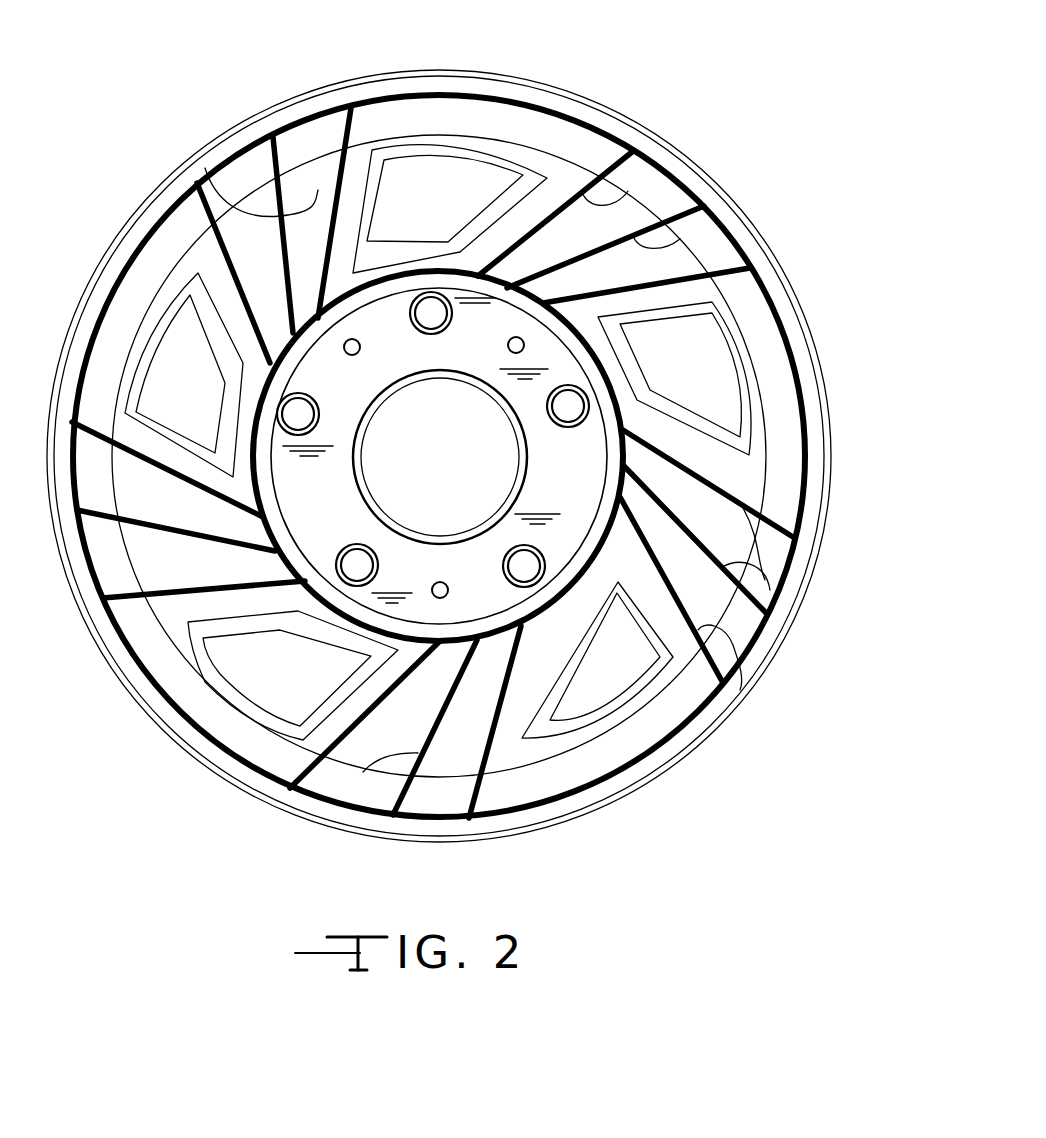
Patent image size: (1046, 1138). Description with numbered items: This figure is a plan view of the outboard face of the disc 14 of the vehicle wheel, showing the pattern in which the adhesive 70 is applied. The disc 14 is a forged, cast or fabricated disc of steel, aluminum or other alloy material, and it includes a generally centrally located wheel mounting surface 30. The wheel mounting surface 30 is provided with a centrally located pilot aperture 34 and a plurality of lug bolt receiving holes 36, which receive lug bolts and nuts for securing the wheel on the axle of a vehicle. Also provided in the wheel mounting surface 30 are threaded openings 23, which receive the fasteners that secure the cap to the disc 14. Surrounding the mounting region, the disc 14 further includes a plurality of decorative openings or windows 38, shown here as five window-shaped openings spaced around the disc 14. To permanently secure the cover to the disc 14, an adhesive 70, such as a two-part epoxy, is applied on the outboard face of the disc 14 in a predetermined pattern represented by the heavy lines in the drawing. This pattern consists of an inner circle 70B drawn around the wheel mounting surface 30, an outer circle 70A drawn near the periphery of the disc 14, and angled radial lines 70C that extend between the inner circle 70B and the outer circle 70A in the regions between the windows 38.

The disc 14 is at (738, 728).
The threaded openings 23 is at (356, 338).
The wheel mounting surface 30 is at (330, 507).
The pilot aperture 34 is at (373, 452).
The lug bolt receiving holes 36 is at (413, 320).
The decorative openings or windows 38 is at (440, 160).
The adhesive 70 is at (840, 405).
The outer circle 70A is at (650, 757).
The inner circle 70B is at (602, 528).
The angled radial lines 70C is at (197, 168).